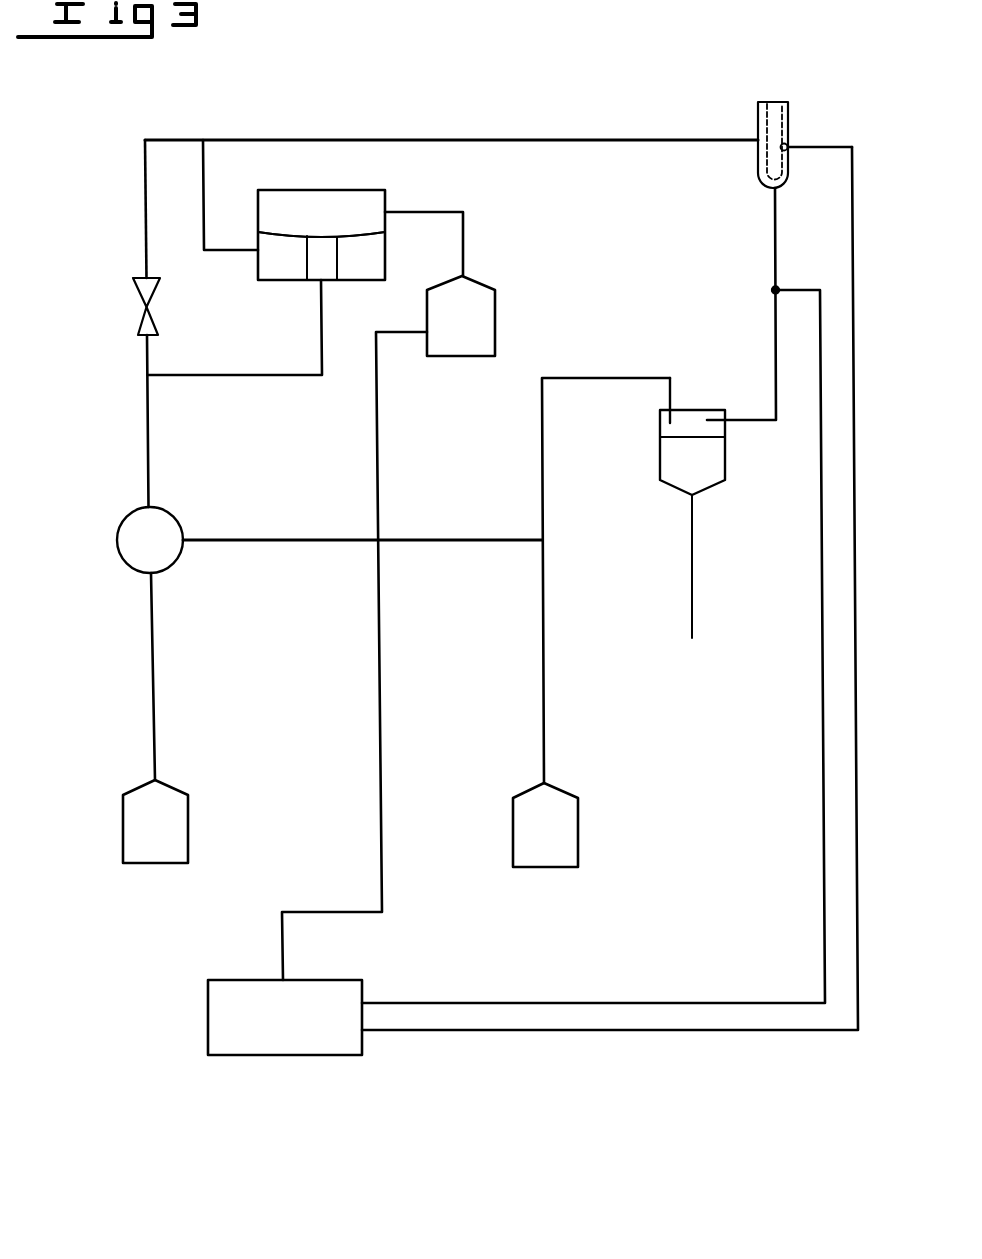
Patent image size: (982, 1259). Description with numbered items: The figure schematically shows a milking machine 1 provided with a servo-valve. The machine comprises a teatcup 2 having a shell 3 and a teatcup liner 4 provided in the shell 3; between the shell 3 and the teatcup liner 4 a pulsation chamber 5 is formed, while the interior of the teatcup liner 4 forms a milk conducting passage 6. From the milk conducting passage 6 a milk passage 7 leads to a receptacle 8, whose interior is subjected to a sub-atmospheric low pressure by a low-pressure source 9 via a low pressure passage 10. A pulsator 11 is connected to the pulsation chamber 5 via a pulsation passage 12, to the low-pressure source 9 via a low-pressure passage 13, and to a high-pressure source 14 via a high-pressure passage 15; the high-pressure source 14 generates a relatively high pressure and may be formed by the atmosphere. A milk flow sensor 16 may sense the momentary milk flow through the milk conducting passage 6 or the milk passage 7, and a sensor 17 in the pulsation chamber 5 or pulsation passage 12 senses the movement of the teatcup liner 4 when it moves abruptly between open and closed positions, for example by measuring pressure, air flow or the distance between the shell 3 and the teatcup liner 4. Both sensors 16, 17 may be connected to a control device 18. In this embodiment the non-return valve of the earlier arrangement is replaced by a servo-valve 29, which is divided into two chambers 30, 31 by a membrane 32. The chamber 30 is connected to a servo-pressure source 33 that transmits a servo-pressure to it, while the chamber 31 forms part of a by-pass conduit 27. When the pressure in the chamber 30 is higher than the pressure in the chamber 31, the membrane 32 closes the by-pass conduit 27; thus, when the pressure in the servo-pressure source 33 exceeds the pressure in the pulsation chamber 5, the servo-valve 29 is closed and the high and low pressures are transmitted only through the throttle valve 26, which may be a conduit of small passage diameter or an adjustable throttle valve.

The milking machine 1 is at (474, 110).
The teatcup 2 is at (776, 102).
The shell 3 is at (790, 110).
The teatcup liner 4 is at (767, 157).
The pulsation chamber 5 is at (757, 120).
The milk conducting passage 6 is at (766, 181).
The milk passage 7 is at (775, 352).
The receptacle 8 is at (697, 472).
The low-pressure source 9 is at (562, 820).
The low pressure passage 10 is at (544, 472).
The pulsator 11 is at (161, 527).
The pulsation passage 12 is at (510, 139).
The low-pressure passage 13 is at (460, 540).
The high-pressure source 14 is at (138, 834).
The high-pressure passage 15 is at (154, 676).
The milk flow sensor 16 is at (772, 291).
The sensor 17 is at (788, 146).
The control device 18 is at (364, 1056).
The throttle valve 26 is at (158, 326).
The by-pass conduit 27 is at (205, 178).
The servo-valve 29 is at (295, 190).
The chamber 30 is at (343, 212).
The chamber 31 is at (360, 262).
The membrane 32 is at (357, 234).
The servo-pressure source 33 is at (468, 320).